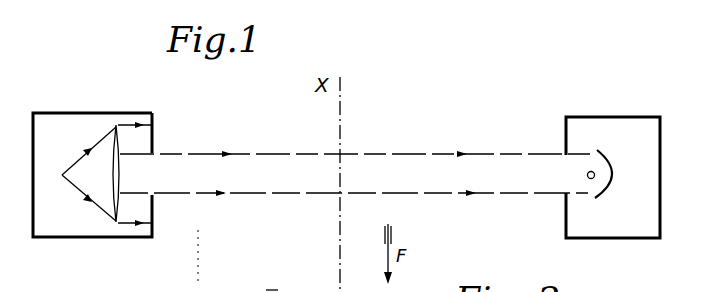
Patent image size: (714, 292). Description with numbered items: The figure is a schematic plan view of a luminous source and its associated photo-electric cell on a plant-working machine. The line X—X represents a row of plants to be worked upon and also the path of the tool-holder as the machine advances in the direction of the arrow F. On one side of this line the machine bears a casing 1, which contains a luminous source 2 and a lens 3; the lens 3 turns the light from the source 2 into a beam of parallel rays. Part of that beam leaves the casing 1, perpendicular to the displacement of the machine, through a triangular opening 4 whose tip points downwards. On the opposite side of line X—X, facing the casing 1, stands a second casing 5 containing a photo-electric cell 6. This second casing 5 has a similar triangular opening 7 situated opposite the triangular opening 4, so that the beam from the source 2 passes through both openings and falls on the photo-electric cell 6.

The casing 1 is at (78, 113).
The luminous source 2 is at (62, 176).
The lens 3 is at (114, 175).
The triangular opening 4 is at (151, 177).
The second casing 5 is at (603, 239).
The photo-electric cell 6 is at (612, 181).
The triangular opening 7 is at (565, 177).